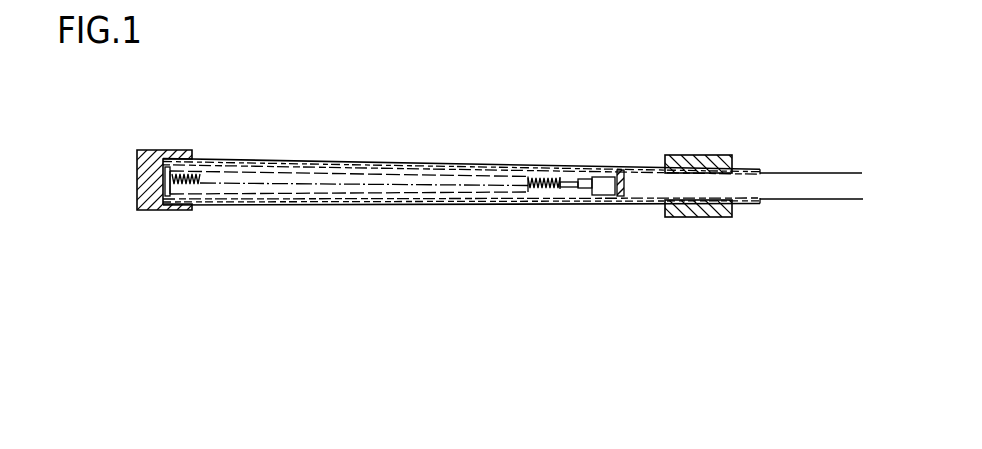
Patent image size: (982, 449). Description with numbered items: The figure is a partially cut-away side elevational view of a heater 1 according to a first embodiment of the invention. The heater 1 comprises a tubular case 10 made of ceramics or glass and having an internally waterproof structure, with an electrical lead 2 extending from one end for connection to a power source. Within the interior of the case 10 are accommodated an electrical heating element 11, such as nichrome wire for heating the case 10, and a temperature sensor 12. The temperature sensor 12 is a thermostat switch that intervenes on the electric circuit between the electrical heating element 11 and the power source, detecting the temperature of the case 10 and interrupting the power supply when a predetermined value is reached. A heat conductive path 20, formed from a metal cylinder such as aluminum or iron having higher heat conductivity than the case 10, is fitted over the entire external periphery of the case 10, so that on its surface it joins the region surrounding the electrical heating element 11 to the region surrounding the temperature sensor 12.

The heater 1 is at (239, 219).
The electrical lead 2 is at (828, 186).
The tubular case 10 is at (323, 172).
The electrical heating element 11 is at (542, 190).
The temperature sensor 12 is at (602, 196).
The heat conductive path 20 is at (298, 160).